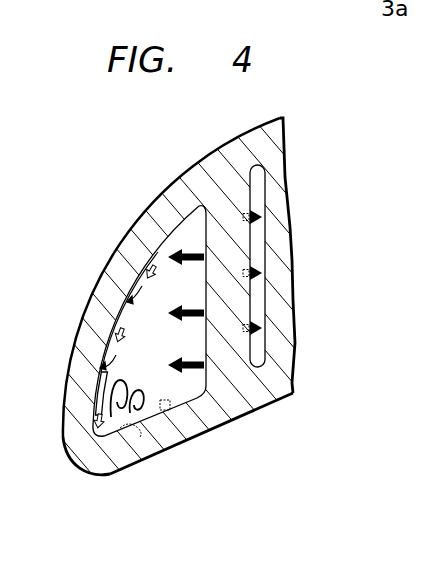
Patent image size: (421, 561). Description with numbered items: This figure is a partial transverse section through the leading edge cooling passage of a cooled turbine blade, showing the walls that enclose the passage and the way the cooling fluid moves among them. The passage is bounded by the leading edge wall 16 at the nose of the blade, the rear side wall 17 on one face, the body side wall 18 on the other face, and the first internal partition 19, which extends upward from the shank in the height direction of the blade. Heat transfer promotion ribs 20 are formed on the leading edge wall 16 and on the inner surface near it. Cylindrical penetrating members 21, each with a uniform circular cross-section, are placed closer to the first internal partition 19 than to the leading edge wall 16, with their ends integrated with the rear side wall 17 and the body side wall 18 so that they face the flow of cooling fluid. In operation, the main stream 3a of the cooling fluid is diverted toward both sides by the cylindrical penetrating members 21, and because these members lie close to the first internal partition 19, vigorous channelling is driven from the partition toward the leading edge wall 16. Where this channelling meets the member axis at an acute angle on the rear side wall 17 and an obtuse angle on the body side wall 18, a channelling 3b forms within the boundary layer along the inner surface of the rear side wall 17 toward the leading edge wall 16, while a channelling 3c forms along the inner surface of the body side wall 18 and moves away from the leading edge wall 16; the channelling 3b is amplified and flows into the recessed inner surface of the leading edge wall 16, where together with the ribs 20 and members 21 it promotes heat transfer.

The main stream 3a is at (177, 250).
The channelling on the back side 3b is at (120, 325).
The channelling on the body side 3c is at (137, 436).
The leading edge wall 16 is at (93, 458).
The rear side wall 17 is at (110, 256).
The body side wall 18 is at (168, 440).
The first internal partition 19 is at (276, 229).
The heat transfer promotion ribs 20 is at (111, 358).
The cylindrical penetrating members 21 is at (233, 350).